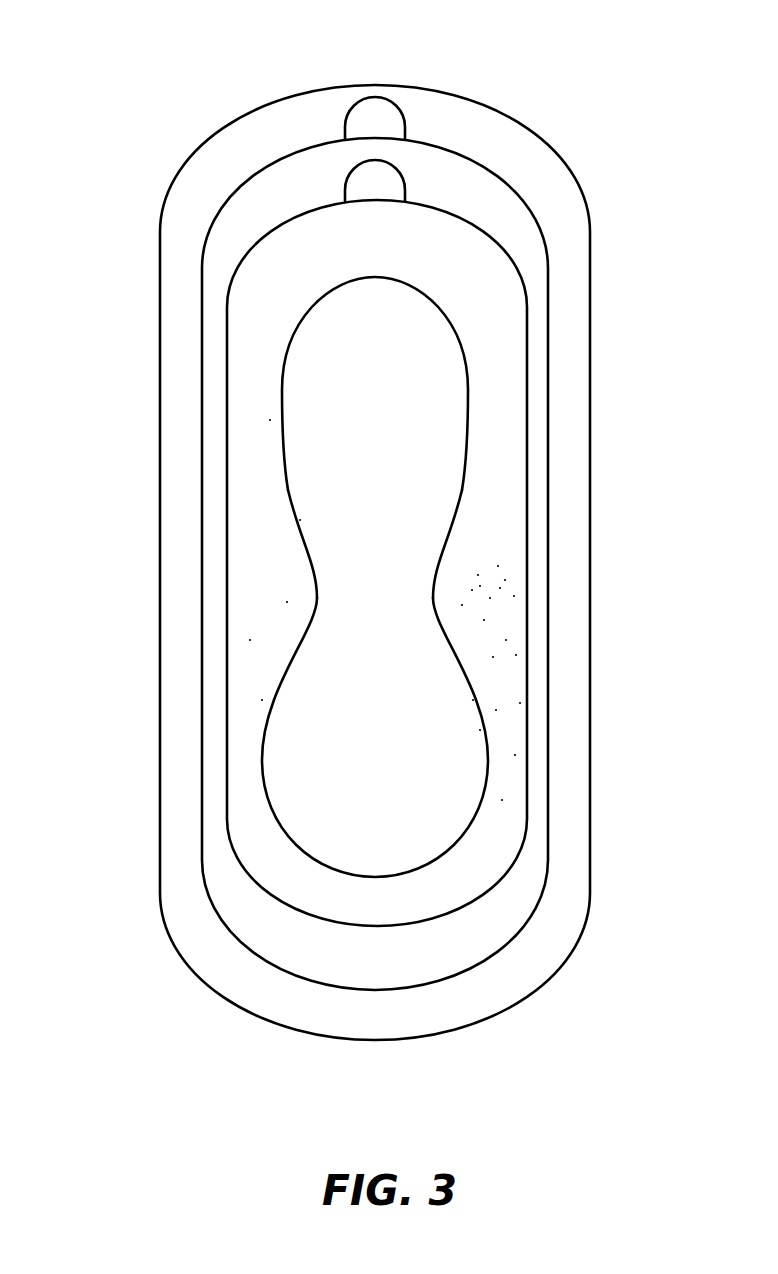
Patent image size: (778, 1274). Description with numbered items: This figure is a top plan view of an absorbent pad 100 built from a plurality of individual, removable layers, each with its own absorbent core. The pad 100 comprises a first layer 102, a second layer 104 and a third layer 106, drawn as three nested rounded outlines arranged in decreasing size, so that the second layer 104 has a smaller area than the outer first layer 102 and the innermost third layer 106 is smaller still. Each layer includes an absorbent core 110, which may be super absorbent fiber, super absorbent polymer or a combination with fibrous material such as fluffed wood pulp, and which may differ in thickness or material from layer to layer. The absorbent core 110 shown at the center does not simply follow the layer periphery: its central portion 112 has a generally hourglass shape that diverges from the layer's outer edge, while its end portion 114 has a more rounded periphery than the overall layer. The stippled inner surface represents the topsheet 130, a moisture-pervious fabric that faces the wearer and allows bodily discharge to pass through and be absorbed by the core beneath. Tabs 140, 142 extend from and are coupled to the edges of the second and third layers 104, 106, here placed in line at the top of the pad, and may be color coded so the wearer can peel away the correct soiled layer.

The absorbent pad 100 is at (132, 115).
The first layer 102 is at (570, 778).
The second layer 104 is at (537, 662).
The third layer 106 is at (502, 607).
The absorbent core 110 is at (458, 805).
The central portion 112 is at (372, 564).
The end portion 114 is at (372, 314).
The topsheet 130 is at (468, 570).
The tab 140 is at (370, 117).
The tab 142 is at (383, 183).